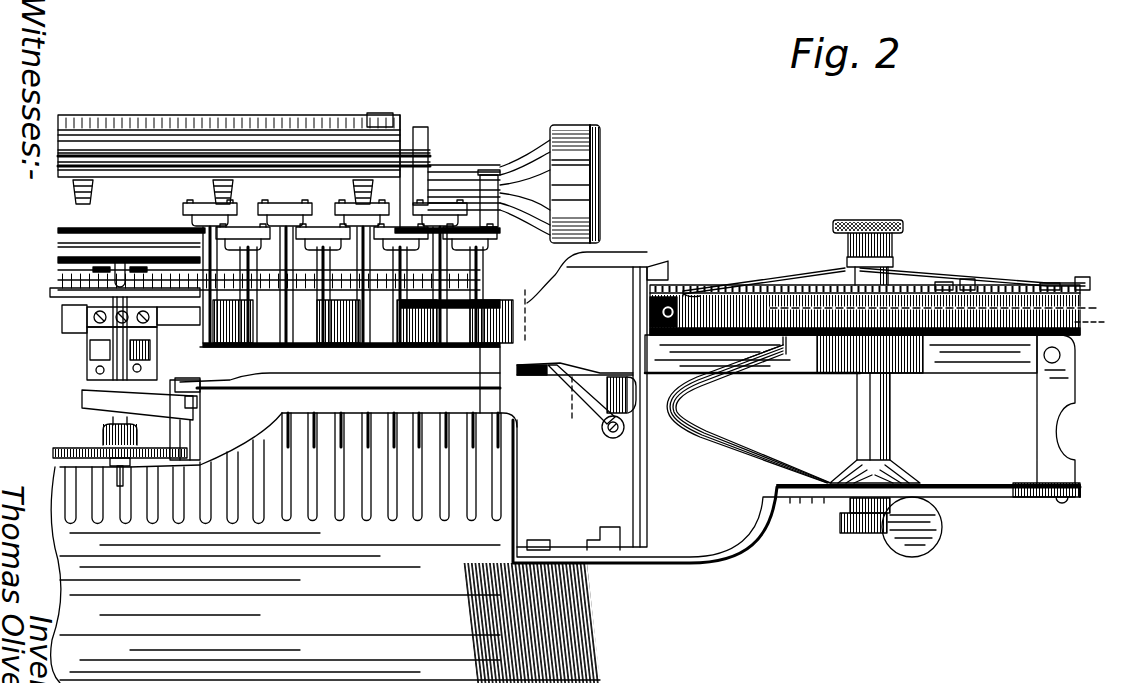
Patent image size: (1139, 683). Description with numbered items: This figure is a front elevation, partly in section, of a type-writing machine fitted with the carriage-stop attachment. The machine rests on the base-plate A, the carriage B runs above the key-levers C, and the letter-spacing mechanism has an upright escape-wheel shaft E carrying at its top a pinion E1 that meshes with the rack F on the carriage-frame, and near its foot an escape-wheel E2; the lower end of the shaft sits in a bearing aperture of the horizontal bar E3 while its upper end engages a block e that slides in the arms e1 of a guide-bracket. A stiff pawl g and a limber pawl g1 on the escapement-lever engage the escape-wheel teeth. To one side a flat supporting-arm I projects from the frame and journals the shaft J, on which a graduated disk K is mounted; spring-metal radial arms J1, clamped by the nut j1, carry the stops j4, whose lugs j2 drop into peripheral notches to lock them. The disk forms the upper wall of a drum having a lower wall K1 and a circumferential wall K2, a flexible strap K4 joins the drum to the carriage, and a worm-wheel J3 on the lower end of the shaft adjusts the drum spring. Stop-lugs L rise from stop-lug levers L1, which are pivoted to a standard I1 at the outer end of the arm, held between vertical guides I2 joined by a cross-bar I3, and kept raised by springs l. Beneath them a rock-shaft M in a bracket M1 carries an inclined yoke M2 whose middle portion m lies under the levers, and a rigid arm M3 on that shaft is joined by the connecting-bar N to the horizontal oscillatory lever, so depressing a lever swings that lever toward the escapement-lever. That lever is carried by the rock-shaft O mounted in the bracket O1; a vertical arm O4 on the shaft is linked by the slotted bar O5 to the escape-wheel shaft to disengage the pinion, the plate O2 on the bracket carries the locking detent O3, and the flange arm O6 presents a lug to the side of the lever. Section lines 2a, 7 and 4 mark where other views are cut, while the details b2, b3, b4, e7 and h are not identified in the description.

The carriage B is at (300, 113).
The type head b4 is at (346, 210).
The type bar post b3 is at (545, 345).
The type bar tip b2 is at (520, 378).
The link or bar O5 is at (118, 262).
The pinion E1 is at (60, 281).
The rack F is at (60, 293).
The section line 4 is at (62, 330).
The screw block e7 is at (85, 312).
The arms of guide-bracket e1 is at (178, 318).
The block e is at (110, 342).
The vertical arm O4 is at (90, 372).
The detent O3 is at (141, 364).
The rock-shaft O is at (58, 420).
The bracket O1 is at (195, 385).
The horizontal arm or plate O2 is at (80, 393).
The horizontal arm with upwardly-projecting lug O6 is at (197, 396).
The limber pawl g1 is at (190, 442).
The escape-wheel shaft E is at (103, 430).
The escape-wheel E2 is at (55, 452).
The horizontal bar E3 is at (113, 482).
The stiff pawl g is at (207, 525).
The connecting-bar N is at (305, 376).
The key-levers C is at (440, 425).
The stop-lug levers L1 is at (362, 330).
The base-plate A is at (325, 575).
The section line 7 is at (547, 356).
The stop-lugs L is at (645, 265).
The vertical guides I2 is at (655, 265).
The cross-bar I3 is at (673, 380).
The radial arms J1 is at (800, 290).
The lugs j2 is at (655, 312).
The flexible strap or band K4 is at (662, 297).
The horizontal disk K is at (1023, 285).
The stops h is at (977, 289).
The stops j4 is at (1085, 280).
The section line 2a is at (1098, 331).
The screw-threaded nut j1 is at (900, 226).
The shaft J is at (855, 516).
The worm-wheel J3 is at (868, 520).
The standard I1 is at (1058, 403).
The supporting-arm I is at (747, 535).
The springs l is at (737, 468).
The circumferential wall K2 is at (785, 350).
The lower wall K1 is at (806, 342).
The rigid arm M3 is at (605, 374).
The inclined yoke M2 is at (578, 383).
The central portion of yoke m is at (640, 388).
The rock-shaft M is at (610, 432).
The bracket M1 is at (625, 440).